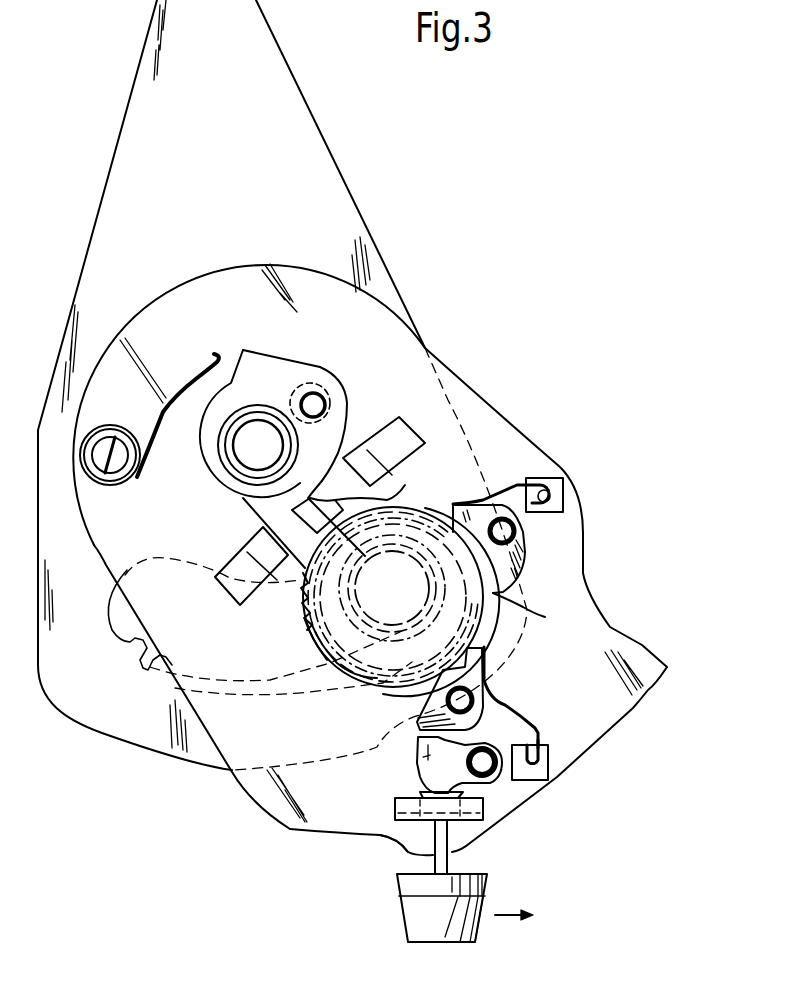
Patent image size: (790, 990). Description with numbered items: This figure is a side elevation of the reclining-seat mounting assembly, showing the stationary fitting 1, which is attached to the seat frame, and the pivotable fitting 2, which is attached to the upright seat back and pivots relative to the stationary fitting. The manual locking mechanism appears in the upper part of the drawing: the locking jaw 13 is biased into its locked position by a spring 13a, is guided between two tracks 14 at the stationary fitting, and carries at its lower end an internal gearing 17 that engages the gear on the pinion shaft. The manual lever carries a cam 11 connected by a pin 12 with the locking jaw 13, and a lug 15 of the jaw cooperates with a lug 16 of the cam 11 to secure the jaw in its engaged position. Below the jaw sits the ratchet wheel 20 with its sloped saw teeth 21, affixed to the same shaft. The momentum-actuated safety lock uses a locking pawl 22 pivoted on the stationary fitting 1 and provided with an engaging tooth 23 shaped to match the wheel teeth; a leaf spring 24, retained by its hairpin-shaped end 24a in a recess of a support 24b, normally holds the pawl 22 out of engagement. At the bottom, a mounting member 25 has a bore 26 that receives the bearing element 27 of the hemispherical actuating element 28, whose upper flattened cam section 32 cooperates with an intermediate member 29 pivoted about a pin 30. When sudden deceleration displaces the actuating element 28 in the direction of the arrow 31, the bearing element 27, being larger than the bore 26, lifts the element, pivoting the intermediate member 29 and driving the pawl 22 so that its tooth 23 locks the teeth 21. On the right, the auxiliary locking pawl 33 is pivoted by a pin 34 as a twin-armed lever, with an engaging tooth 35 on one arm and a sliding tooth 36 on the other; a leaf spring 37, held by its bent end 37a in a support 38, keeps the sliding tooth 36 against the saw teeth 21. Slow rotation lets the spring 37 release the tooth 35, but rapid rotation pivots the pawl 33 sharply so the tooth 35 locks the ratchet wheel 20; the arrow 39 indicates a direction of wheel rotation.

The stationary fitting 1 is at (627, 650).
The pivotable fitting 2 is at (218, 111).
The cam 11 is at (321, 386).
The pin 12 is at (327, 404).
The locking jaw 13 is at (265, 525).
The spring 13a is at (180, 416).
The tracks 14 is at (403, 422).
The lug 15 is at (426, 482).
The lug 16 is at (246, 511).
The internal gearing 17 is at (406, 498).
The ratchet wheel 20 is at (340, 660).
The saw teeth 21 is at (300, 618).
The locking pawl 22 is at (415, 714).
The engaging tooth 23 is at (445, 668).
The leaf spring 24 is at (498, 690).
The hairpin-shaped end 24a is at (534, 722).
The support 24b is at (548, 770).
The mounting member 25 is at (393, 840).
The bore 26 is at (450, 824).
The bearing element 27 is at (484, 810).
The actuating element 28 is at (413, 917).
The intermediate member 29 is at (417, 762).
The pin 30 is at (497, 772).
The arrow 31 is at (503, 917).
The flattened cam section 32 is at (395, 797).
The locking pawl 33 is at (521, 552).
The pin 34 is at (487, 500).
The engaging tooth 35 is at (532, 606).
The sliding tooth 36 is at (441, 602).
The leaf spring 37 is at (504, 492).
The bent end 37a is at (563, 503).
The support 38 is at (561, 477).
The arrow 39 is at (312, 627).